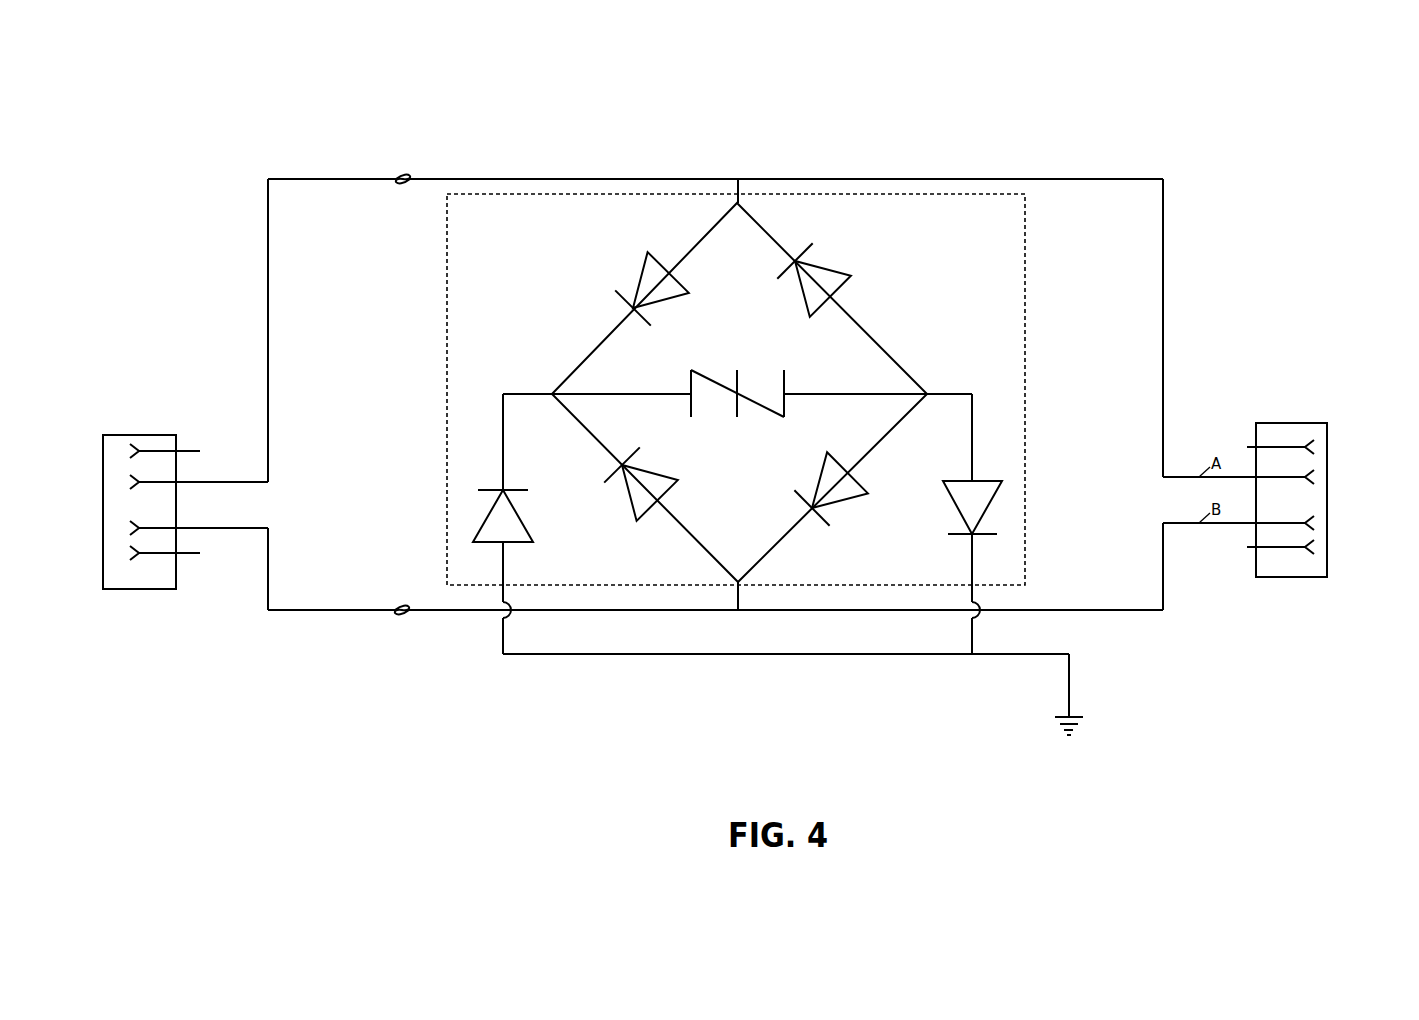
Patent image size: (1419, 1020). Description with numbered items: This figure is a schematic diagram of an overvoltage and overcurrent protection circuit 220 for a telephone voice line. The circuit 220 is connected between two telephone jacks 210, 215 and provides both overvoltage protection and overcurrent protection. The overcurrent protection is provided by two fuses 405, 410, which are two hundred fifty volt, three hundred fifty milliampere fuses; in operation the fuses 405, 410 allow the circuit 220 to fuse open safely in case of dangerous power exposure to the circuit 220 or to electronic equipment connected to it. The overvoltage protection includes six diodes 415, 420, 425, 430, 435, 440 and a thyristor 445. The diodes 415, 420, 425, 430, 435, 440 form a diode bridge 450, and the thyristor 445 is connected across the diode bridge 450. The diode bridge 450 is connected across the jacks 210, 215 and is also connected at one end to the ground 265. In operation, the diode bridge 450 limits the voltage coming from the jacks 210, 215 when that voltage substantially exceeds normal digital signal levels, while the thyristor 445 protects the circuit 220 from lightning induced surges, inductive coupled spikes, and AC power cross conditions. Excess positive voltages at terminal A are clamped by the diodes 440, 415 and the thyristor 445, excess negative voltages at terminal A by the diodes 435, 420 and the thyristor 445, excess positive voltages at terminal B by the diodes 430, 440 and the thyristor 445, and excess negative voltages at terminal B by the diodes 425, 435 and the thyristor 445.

The RJ-11 jack 210 is at (185, 512).
The RJ-11 jack 215 is at (1245, 500).
The overvoltage and overcurrent protection circuit 220 is at (1225, 260).
The ground 265 is at (1069, 740).
The fuse 405 is at (403, 174).
The fuse 410 is at (398, 605).
The diode 415 is at (652, 289).
The diode 420 is at (814, 280).
The diode 425 is at (831, 489).
The diode 430 is at (641, 484).
The diode 435 is at (503, 516).
The diode 440 is at (972, 507).
The thyristor 445 is at (725, 370).
The diode bridge 450 is at (447, 262).